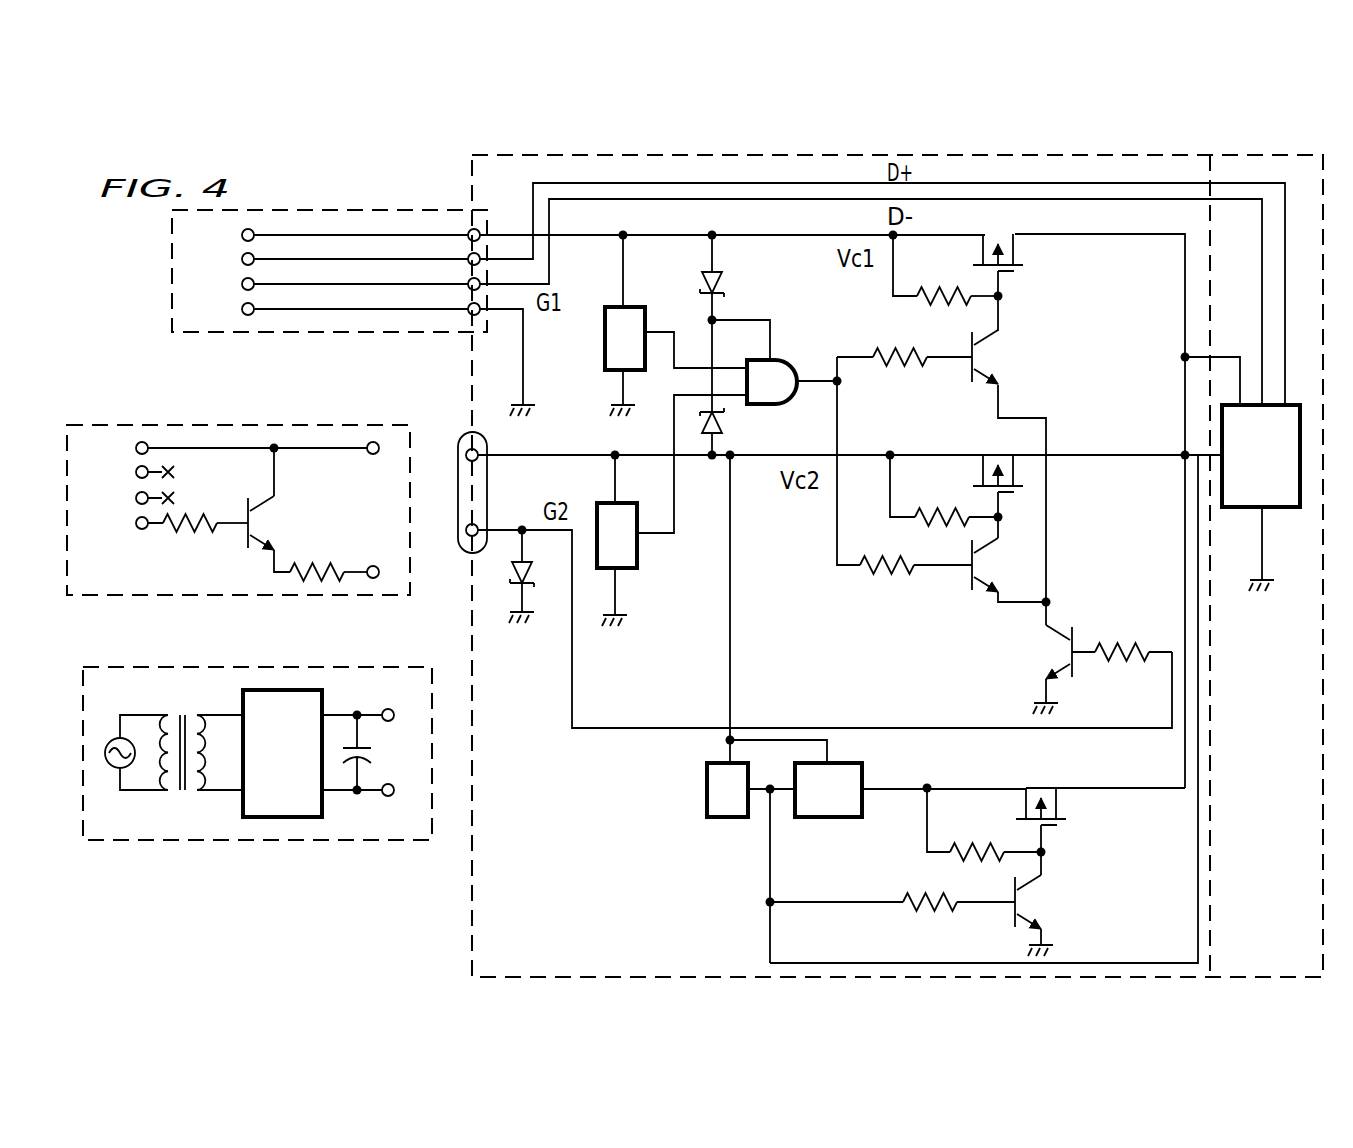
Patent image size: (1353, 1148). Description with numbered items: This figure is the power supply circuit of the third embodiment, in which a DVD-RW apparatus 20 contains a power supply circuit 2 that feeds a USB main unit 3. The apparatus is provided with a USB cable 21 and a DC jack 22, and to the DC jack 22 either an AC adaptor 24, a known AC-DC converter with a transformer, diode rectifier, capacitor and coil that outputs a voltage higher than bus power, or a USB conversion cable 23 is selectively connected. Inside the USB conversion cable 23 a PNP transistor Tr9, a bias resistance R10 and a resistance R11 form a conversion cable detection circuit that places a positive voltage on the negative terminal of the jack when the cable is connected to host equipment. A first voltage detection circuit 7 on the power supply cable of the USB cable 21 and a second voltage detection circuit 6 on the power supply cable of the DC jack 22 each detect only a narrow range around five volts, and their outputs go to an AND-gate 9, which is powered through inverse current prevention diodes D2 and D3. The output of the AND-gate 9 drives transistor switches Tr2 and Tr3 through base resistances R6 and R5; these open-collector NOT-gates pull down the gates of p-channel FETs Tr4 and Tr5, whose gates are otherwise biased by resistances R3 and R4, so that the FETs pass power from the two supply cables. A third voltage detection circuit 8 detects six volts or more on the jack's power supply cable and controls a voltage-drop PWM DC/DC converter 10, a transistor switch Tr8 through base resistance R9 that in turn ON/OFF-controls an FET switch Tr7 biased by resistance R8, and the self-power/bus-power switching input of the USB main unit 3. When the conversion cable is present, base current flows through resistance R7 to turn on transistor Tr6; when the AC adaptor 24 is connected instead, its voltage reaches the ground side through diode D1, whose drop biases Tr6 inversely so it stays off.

The DVD-RW apparatus 20 is at (428, 946).
The power supply circuit 2 is at (896, 566).
The USB main unit 3 is at (1290, 508).
The USB cable 21 is at (329, 298).
The DC jack 22 is at (487, 476).
The USB conversion cable 23 is at (238, 530).
The AC adaptor 24 is at (257, 776).
The second voltage detection circuit 6 is at (640, 548).
The first voltage detection circuit 7 is at (633, 302).
The third voltage detection circuit 8 is at (705, 785).
The AND-gate 9 is at (775, 330).
The DC/DC converter 10 is at (830, 820).
The diode D1 is at (538, 576).
The inverse current prevention diode D2 is at (735, 323).
The inverse current prevention diode D3 is at (730, 431).
The resistance R3 is at (960, 315).
The resistance R4 is at (946, 490).
The base resistance R5 is at (916, 552).
The base resistance R6 is at (922, 374).
The resistance R7 is at (1122, 638).
The resistance R8 is at (986, 824).
The base resistance R9 is at (959, 919).
The bias resistance R10 is at (205, 542).
The resistance R11 is at (328, 551).
The transistor switch Tr2 is at (1005, 340).
The transistor switch Tr3 is at (1002, 554).
The FET Tr4 is at (998, 250).
The FET Tr5 is at (998, 470).
The transistor Tr6 is at (1040, 669).
The FET switch Tr7 is at (1100, 804).
The transistor switch Tr8 is at (1045, 904).
The PNP transistor Tr9 is at (277, 510).